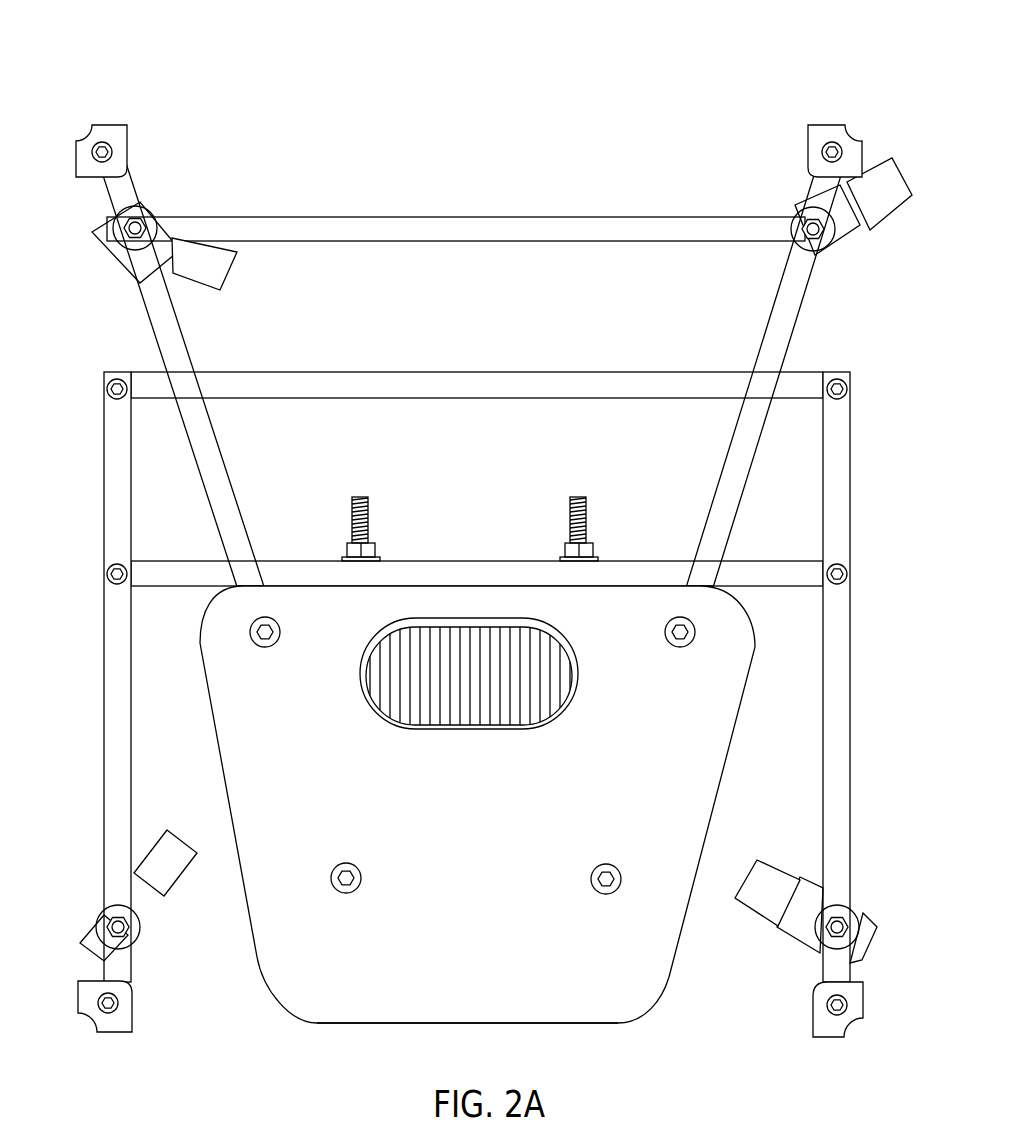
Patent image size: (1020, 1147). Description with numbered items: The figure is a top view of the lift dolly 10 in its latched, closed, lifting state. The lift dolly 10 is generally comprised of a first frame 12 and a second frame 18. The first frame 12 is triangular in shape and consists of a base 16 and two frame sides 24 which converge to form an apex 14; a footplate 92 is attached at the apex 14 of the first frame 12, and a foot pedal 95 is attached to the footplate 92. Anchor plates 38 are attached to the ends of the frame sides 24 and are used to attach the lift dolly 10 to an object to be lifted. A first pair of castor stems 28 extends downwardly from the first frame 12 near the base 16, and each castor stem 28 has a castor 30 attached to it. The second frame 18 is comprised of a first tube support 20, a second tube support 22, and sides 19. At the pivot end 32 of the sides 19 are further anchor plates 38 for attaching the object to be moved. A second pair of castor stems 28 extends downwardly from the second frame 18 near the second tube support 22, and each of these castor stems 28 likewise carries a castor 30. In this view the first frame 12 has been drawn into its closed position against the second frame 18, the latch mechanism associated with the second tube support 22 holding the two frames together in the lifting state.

The lift dolly 10 is at (490, 547).
The first frame 12 is at (456, 226).
The apex 14 is at (477, 838).
The base 16 is at (456, 252).
The second frame 18 is at (520, 658).
The sides 19 is at (509, 677).
The first tube support 20 is at (477, 366).
The second tube support 22 is at (477, 540).
The frame sides 24 is at (492, 375).
The castor stems 28 is at (478, 582).
The castor 30 is at (523, 562).
The pivot end 32 is at (504, 962).
The anchor plates 38 is at (474, 591).
The footplate 92 is at (467, 1043).
The foot pedal 95 is at (509, 673).